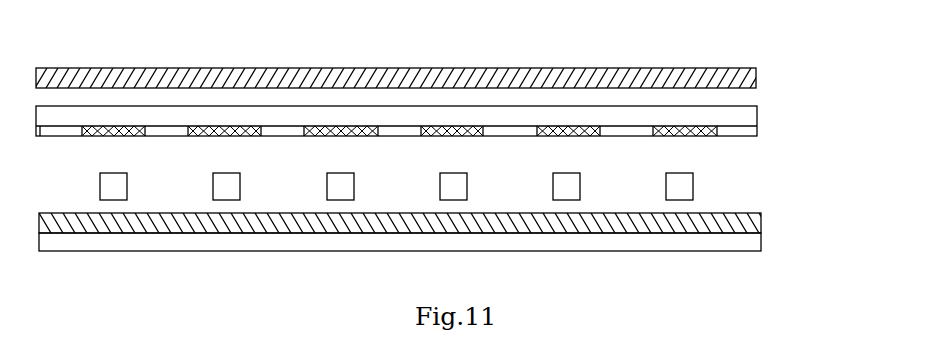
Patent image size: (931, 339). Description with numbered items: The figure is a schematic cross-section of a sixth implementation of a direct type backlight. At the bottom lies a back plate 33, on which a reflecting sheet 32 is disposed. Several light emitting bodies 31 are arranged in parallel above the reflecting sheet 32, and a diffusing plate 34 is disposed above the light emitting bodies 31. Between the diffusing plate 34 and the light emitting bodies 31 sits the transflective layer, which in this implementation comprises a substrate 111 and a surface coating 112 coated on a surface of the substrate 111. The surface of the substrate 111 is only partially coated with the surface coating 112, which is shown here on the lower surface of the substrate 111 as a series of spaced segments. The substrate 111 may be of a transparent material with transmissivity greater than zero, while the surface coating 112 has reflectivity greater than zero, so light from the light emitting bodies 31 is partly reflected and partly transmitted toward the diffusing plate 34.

The diffusing plate 34 is at (694, 68).
The substrate 111 is at (731, 113).
The surface coating 112 is at (752, 133).
The light emitting bodies 31 is at (679, 185).
The reflecting sheet 32 is at (680, 223).
The back plate 33 is at (679, 241).